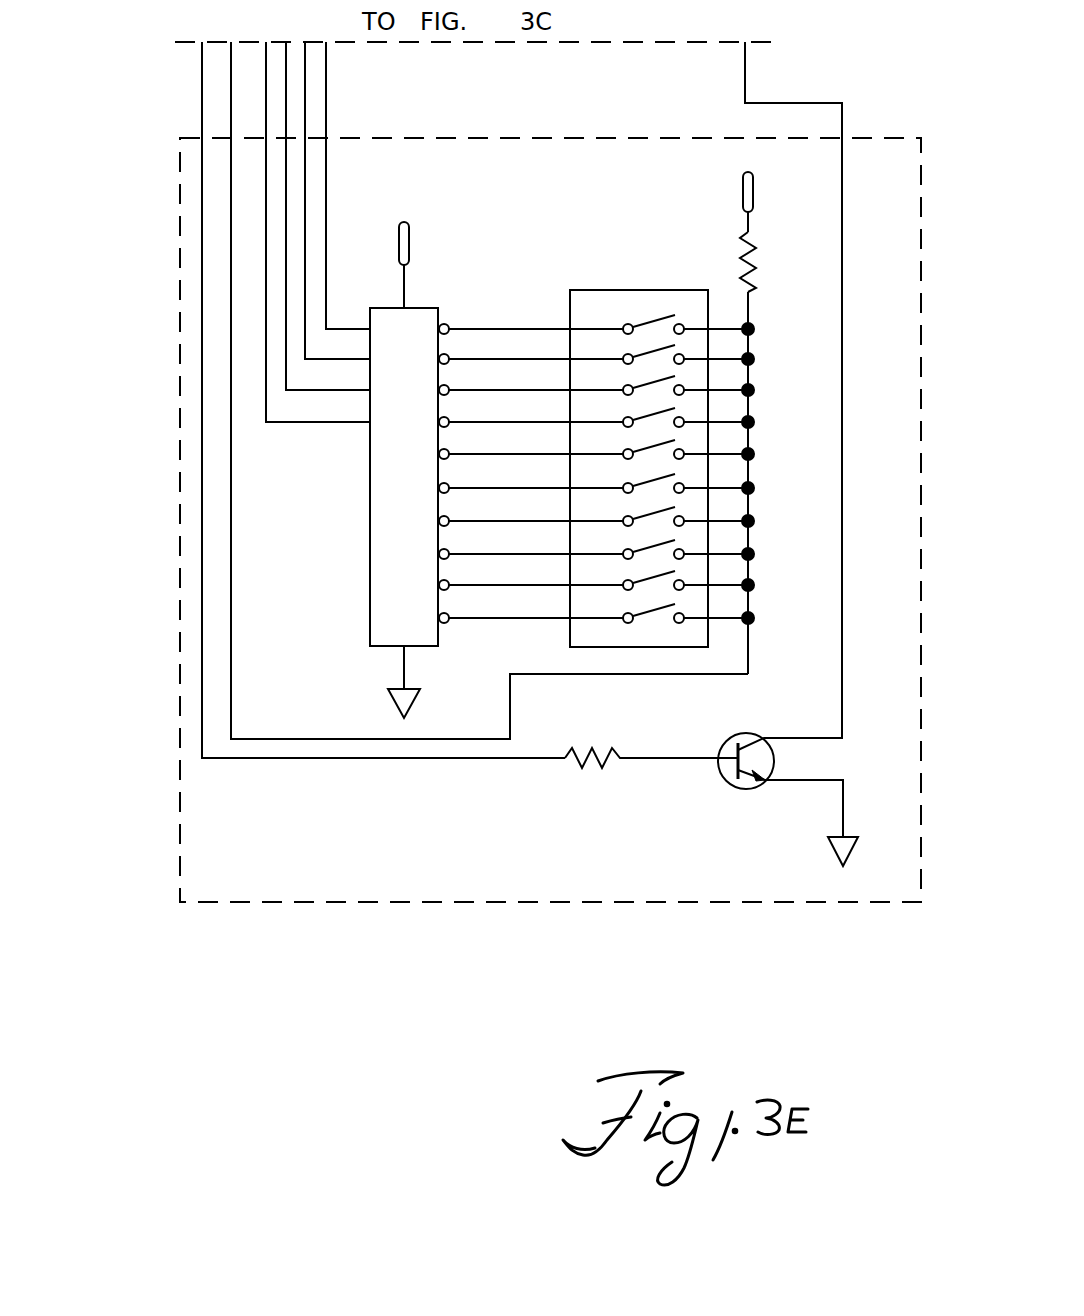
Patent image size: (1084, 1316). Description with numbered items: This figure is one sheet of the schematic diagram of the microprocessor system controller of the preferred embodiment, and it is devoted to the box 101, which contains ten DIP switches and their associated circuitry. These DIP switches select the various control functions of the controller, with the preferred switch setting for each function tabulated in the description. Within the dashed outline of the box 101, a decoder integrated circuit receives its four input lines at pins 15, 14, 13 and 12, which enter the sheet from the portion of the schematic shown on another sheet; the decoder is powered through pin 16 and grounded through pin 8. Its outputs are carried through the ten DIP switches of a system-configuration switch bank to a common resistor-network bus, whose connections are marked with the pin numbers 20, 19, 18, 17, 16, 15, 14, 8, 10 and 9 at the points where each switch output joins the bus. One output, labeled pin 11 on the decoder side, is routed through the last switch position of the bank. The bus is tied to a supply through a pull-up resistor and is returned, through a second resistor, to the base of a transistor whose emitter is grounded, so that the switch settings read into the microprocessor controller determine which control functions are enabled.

The box 101 is at (180, 350).
The U7 ground pin 8 is at (409, 682).
The RP1-3 pin 9 connection 9 is at (738, 618).
The RP1-3 pin 10 connection 10 is at (738, 585).
The U7 output pin 11 line 11 is at (561, 607).
The U7 input D pin 12 line 12 is at (318, 232).
The U7 input C pin 13 line 13 is at (328, 216).
The U7 input B pin 14 line 14 is at (337, 200).
The U7 input A pin 15 line 15 is at (348, 185).
The U7 +5V supply pin 16 is at (407, 242).
The RP1-3 pin 17 connection 17 is at (738, 422).
The RP1-3 pin 18 connection 18 is at (738, 390).
The RP1-3 pin 19 connection 19 is at (738, 359).
The RP1-3 pin 20 connection 20 is at (738, 329).